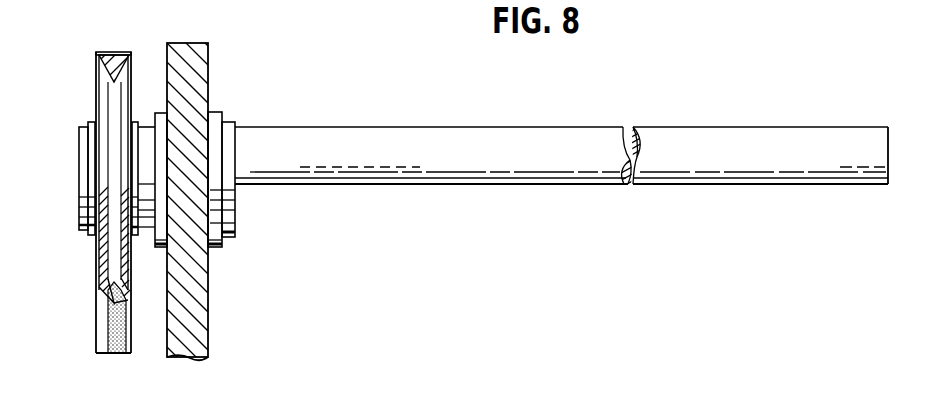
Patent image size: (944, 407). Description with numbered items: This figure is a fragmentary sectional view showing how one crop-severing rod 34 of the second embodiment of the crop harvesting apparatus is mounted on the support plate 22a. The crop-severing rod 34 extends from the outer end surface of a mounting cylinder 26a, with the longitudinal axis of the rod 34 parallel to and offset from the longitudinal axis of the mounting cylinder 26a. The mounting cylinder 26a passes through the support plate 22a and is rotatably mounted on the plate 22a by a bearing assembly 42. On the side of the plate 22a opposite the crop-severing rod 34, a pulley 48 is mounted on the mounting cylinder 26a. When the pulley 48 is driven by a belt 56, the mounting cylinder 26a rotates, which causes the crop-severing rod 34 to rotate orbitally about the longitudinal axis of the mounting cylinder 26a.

The support plate 22a is at (201, 60).
The bearing assembly 42 is at (211, 113).
The mounting cylinder 26a is at (236, 224).
The crop-severing rod 34 is at (368, 133).
The pulley 48 is at (95, 93).
The belt 56 is at (97, 334).